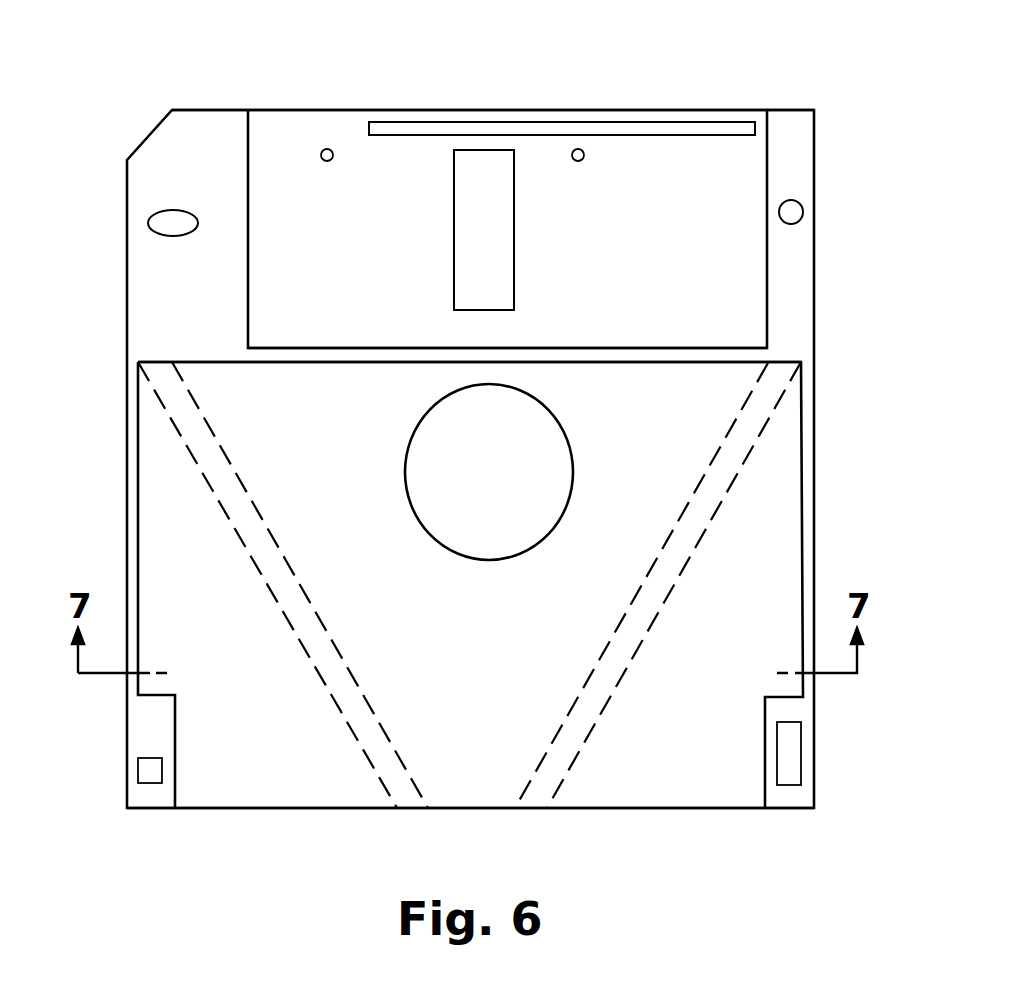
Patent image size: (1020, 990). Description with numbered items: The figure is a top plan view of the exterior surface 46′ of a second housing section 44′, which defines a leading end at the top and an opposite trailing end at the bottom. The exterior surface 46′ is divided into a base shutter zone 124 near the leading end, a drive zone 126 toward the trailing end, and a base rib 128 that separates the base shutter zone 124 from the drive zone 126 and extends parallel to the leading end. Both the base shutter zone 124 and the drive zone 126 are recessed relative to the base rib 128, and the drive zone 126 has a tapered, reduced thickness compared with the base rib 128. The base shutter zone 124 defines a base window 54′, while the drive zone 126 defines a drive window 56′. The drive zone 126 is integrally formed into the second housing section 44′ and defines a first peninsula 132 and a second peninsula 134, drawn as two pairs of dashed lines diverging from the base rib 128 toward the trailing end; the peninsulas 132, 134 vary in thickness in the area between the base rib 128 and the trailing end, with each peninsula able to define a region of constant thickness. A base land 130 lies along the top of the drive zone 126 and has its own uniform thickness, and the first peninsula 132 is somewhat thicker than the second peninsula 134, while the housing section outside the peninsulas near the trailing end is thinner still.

The second housing section 44′ is at (107, 62).
The exterior surface 46′ is at (782, 160).
The base window 54′ is at (454, 197).
The drive window 56′ is at (405, 478).
The base shutter zone 124 is at (283, 180).
The drive zone 126 is at (743, 570).
The base rib 128 is at (338, 357).
The base land 130 is at (292, 362).
The first peninsula 132 is at (352, 670).
The second peninsula 134 is at (320, 673).